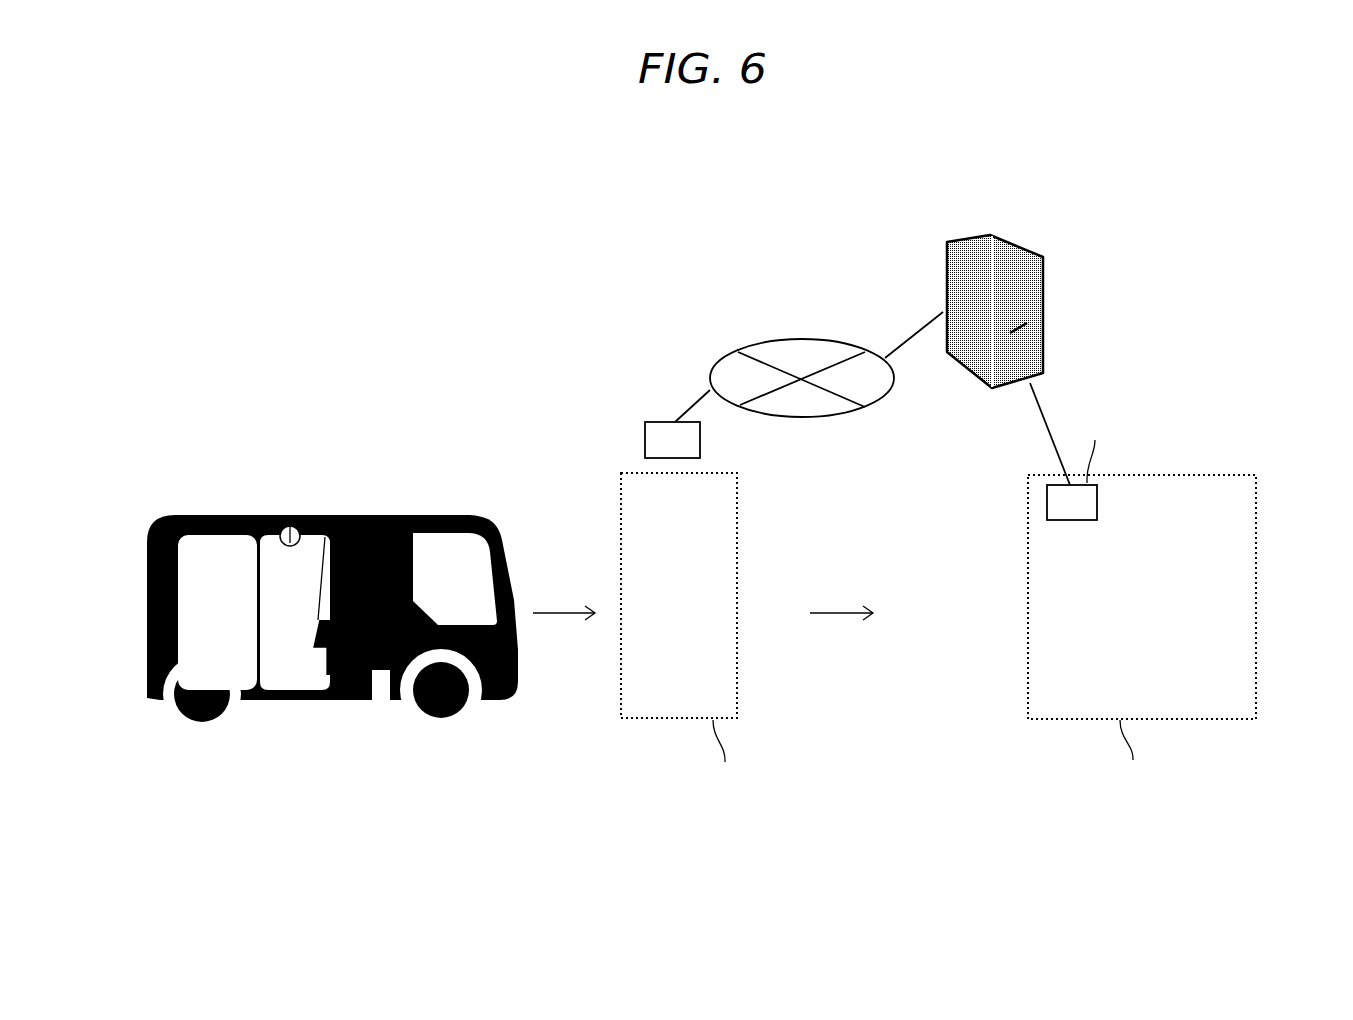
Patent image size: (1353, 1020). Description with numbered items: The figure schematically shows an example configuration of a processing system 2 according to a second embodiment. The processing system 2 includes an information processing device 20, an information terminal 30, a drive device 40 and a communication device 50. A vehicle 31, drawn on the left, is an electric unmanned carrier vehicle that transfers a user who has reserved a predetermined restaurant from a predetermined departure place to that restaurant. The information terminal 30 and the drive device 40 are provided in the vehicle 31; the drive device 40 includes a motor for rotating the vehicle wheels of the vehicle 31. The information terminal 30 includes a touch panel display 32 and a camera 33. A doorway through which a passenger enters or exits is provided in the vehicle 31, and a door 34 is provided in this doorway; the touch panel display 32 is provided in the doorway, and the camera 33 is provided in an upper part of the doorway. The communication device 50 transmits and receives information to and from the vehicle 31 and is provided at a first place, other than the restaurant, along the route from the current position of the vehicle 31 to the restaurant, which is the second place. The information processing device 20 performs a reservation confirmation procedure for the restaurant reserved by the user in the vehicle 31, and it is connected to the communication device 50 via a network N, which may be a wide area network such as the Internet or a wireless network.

The processing system 2 is at (1147, 212).
The information processing device 20 is at (1020, 241).
The information terminal 30 is at (293, 412).
The vehicle 31 is at (412, 515).
The touch panel display 32 is at (325, 515).
The camera 33 is at (288, 515).
The door 34 is at (202, 548).
The drive device 40 is at (380, 687).
The communication device 50 is at (643, 443).
The network N is at (795, 338).